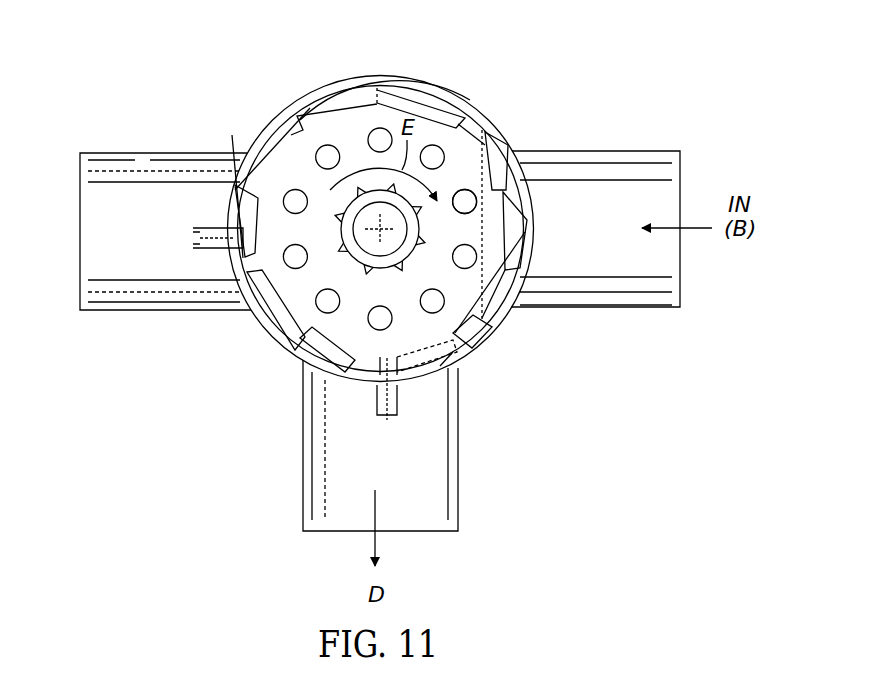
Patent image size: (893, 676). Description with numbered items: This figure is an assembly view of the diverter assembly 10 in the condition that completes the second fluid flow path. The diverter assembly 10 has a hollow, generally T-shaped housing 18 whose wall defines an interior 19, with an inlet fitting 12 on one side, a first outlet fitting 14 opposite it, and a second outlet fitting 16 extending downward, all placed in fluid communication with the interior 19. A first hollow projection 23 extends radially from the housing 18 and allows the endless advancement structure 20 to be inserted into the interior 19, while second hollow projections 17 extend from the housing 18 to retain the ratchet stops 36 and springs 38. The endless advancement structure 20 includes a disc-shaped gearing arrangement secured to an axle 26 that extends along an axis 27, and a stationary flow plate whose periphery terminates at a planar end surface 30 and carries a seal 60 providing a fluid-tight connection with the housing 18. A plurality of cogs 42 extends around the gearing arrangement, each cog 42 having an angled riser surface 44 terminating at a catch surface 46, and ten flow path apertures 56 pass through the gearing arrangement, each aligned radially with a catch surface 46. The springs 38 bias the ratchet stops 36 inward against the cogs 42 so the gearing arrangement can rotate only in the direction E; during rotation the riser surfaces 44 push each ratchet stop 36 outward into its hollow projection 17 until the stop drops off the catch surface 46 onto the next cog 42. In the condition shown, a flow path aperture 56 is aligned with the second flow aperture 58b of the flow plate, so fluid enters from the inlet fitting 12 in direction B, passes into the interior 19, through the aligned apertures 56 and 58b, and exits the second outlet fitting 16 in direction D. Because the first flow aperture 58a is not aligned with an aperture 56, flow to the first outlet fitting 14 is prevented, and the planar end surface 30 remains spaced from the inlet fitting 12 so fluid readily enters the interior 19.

The diverter assembly 10 is at (548, 82).
The inlet fitting 12 is at (610, 166).
The first outlet fitting 14 is at (137, 172).
The second outlet fitting 16 is at (443, 492).
The second hollow projection 17 is at (192, 244).
The housing 18 is at (447, 84).
The interior 19 is at (497, 158).
The endless advancement structure 20 is at (485, 118).
The first hollow projection 23 is at (318, 92).
The axle 26 is at (408, 229).
The axis 27 is at (403, 250).
The planar end surface 30 is at (490, 318).
The ratchet stop 36 is at (243, 227).
The spring 38 is at (187, 237).
The cog 42 is at (440, 364).
The angled riser surface 44 is at (243, 220).
The catch surface 46 is at (246, 308).
The flow path aperture 56 is at (293, 184).
The first flow aperture 58a is at (272, 217).
The second flow aperture 58b is at (370, 330).
The seal 60 is at (399, 85).